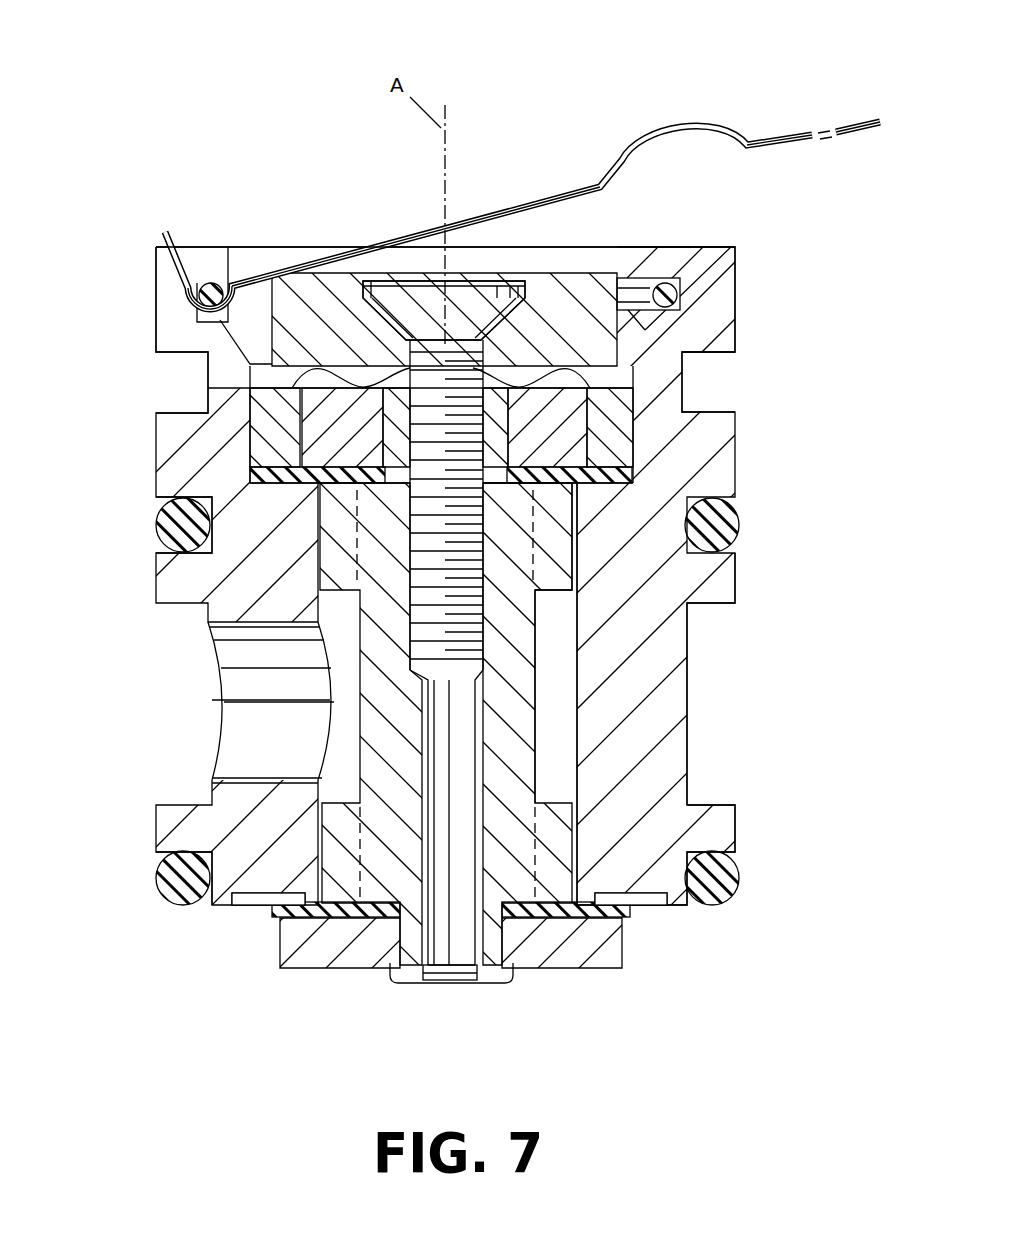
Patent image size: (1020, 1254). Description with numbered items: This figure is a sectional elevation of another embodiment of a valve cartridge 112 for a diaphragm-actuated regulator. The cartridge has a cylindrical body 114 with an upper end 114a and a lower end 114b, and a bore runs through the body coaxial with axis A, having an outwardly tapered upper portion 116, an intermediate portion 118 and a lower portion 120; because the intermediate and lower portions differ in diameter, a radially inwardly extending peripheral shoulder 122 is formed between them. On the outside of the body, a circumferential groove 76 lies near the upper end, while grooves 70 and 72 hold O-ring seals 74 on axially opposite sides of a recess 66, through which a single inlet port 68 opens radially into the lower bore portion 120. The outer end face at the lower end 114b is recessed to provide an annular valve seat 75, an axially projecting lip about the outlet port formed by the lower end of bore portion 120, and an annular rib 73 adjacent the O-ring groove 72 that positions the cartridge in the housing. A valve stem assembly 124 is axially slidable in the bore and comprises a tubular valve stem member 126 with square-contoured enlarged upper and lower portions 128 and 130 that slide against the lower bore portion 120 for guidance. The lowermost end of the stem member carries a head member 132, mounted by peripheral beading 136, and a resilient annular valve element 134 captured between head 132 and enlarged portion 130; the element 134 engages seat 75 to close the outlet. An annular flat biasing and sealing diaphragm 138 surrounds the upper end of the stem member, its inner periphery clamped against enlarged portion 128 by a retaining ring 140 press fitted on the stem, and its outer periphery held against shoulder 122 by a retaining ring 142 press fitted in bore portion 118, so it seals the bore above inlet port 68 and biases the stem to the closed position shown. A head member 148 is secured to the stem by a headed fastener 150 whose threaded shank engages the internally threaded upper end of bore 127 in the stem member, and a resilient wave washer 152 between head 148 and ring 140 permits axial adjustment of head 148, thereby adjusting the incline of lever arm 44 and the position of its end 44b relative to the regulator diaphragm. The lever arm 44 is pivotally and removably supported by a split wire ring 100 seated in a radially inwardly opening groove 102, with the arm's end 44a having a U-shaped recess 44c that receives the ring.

The valve cartridge 112 is at (196, 145).
The lever arm 44 is at (679, 100).
The end of the lever arm 44a is at (287, 277).
The end of the lever arm 44b is at (860, 122).
The U-shaped recess 44c is at (187, 317).
The split wire ring 100 is at (203, 280).
The groove 102 is at (690, 268).
The head member 148 is at (342, 288).
The headed fastener 150 is at (477, 255).
The wave washer 152 is at (300, 400).
The upper portion of the bore 116 is at (632, 298).
The cylindrical body 114 is at (177, 582).
The upper end of the body 114a is at (672, 247).
The lower end of the body 114b is at (638, 845).
The intermediate portion of the bore 118 is at (680, 387).
The circumferential groove 76 is at (177, 355).
The retaining ring 142 is at (290, 412).
The retaining ring 140 is at (613, 437).
The biasing and sealing diaphragm 138 is at (640, 467).
The peripheral shoulder 122 is at (597, 483).
The enlarged upper portion 128 is at (552, 557).
The enlarged lower portion 130 is at (340, 843).
The lower portion of the bore 120 is at (572, 697).
The valve stem member 126 is at (515, 752).
The bore 127 is at (462, 962).
The peripheral beading 136 is at (407, 983).
The head member 132 is at (340, 957).
The valve element 134 is at (573, 920).
The annular rib 73 is at (215, 905).
The valve seat 75 is at (620, 903).
The groove 70 is at (160, 497).
The circumferential groove 72 is at (158, 850).
The O-ring seals 74 is at (177, 530).
The inlet port 68 is at (213, 647).
The valve stem assembly 124 is at (250, 683).
The recess 66 is at (722, 605).